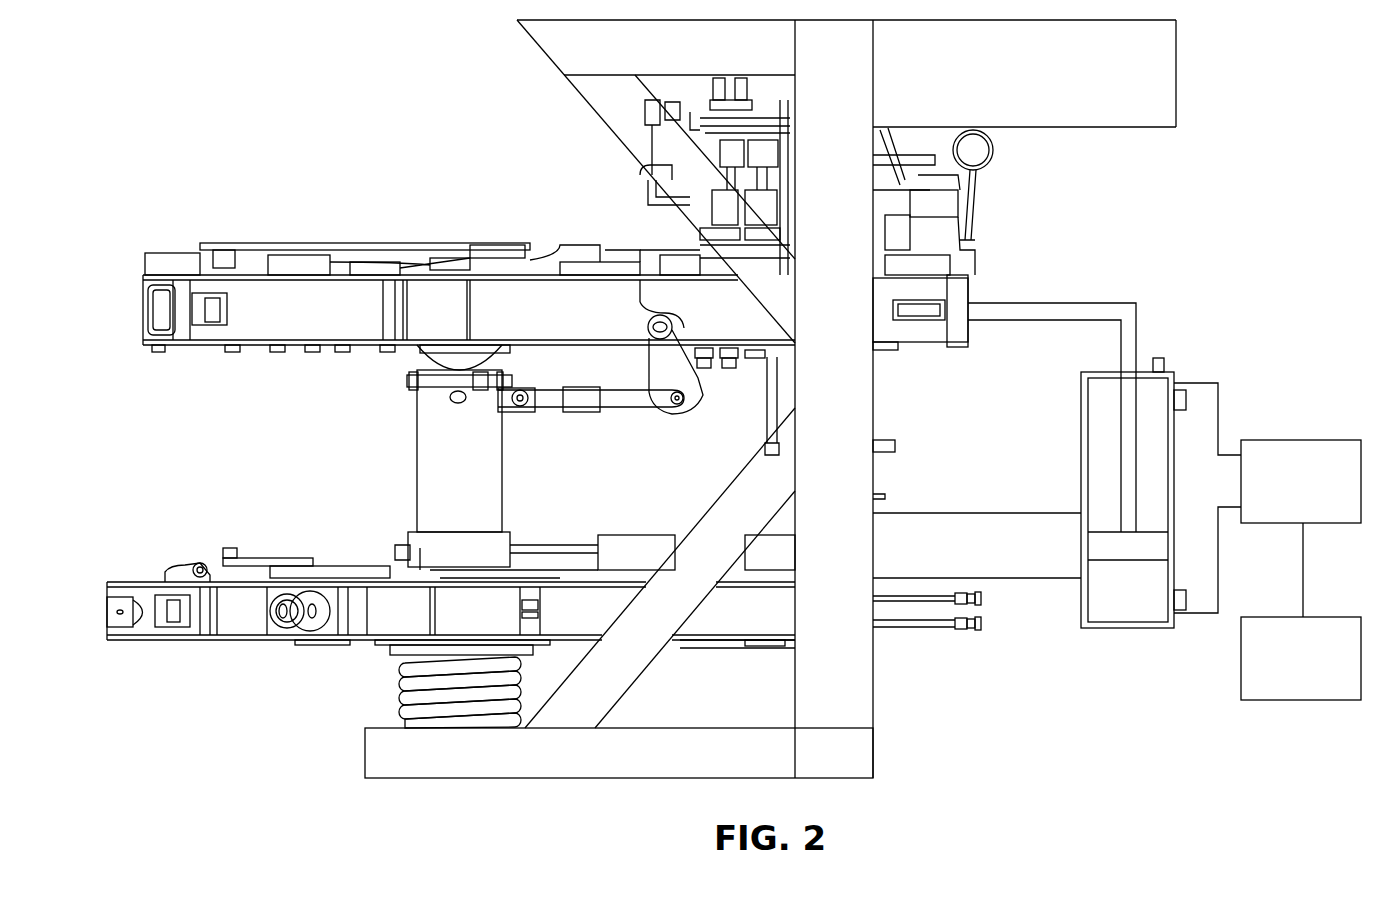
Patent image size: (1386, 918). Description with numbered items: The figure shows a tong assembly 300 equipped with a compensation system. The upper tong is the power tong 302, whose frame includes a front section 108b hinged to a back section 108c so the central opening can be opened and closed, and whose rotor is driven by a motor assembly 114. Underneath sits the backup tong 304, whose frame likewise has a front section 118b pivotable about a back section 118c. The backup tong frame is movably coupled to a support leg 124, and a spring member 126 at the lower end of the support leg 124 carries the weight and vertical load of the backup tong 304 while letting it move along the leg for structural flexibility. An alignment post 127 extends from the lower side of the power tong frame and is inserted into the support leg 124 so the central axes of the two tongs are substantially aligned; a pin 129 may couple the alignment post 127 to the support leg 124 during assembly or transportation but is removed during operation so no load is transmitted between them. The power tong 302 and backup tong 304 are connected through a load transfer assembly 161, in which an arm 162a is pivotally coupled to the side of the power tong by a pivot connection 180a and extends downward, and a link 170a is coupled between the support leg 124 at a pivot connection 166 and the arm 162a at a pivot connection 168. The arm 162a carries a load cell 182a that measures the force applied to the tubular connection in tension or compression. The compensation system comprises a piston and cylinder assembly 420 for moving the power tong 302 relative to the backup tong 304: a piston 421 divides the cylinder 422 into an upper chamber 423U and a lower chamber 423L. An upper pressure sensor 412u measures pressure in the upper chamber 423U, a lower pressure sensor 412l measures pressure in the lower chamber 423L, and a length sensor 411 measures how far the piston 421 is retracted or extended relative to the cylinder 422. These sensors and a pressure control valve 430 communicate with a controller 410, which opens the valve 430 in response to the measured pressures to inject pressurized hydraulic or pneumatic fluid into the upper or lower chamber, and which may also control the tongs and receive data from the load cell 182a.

The tong assembly 300 is at (402, 76).
The motor assembly 114 is at (781, 78).
The power tong 302 is at (226, 246).
The front section 108b is at (259, 319).
The back section 108c is at (708, 321).
The pivot connection 180a is at (649, 325).
The alignment post 127 is at (420, 362).
The load transfer assembly 161 is at (512, 391).
The pin 129 is at (451, 400).
The pivot connection 166 is at (520, 408).
The load cell 182a is at (580, 413).
The link 170a is at (627, 402).
The pivot connection 168 is at (679, 406).
The arm 162a is at (701, 395).
The support leg 124 is at (480, 490).
The front section 118b is at (217, 621).
The back section 118c is at (560, 620).
The backup tong 304 is at (147, 644).
The spring member 126 is at (514, 697).
The piston 421 is at (1137, 338).
The length sensor 411 is at (1166, 360).
The piston and cylinder assembly 420 is at (1109, 487).
The upper pressure sensor 412u is at (1187, 398).
The upper chamber 423U is at (1100, 438).
The pressure control valve 430 is at (1336, 440).
The lower pressure sensor 412l is at (1187, 600).
The cylinder 422 is at (1080, 606).
The lower chamber 423L is at (1128, 596).
The controller 410 is at (1305, 700).